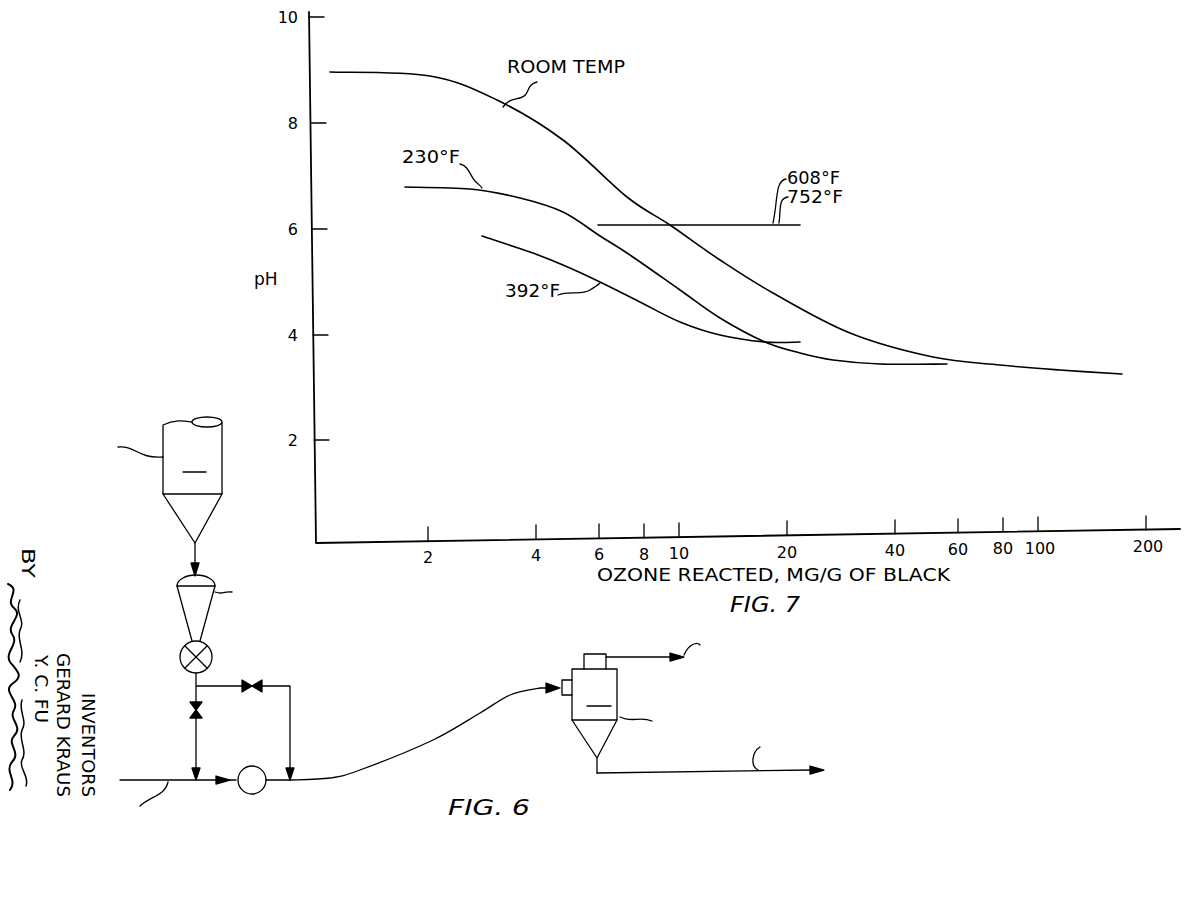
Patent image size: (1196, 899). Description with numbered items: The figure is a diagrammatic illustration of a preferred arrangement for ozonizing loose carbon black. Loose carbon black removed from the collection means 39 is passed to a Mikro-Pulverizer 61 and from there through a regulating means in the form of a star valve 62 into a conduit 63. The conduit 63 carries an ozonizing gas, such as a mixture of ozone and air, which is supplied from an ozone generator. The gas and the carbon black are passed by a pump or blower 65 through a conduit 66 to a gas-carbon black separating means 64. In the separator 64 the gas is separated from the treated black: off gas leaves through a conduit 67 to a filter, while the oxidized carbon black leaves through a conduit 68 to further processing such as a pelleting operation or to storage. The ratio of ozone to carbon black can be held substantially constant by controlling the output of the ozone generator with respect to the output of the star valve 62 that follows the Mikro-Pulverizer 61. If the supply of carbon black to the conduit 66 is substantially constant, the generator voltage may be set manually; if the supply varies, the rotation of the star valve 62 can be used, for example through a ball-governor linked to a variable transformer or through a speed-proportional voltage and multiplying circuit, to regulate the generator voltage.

The collection means 39 is at (129, 496).
The Mikro-Pulverizer 61 is at (177, 592).
The star valve 62 is at (212, 648).
The conduit 63 is at (147, 780).
The gas-carbon black separating means 64 is at (722, 713).
The pump or blower 65 is at (241, 772).
The conduit 66 is at (363, 770).
The conduit 67 is at (635, 662).
The conduit 68 is at (668, 772).